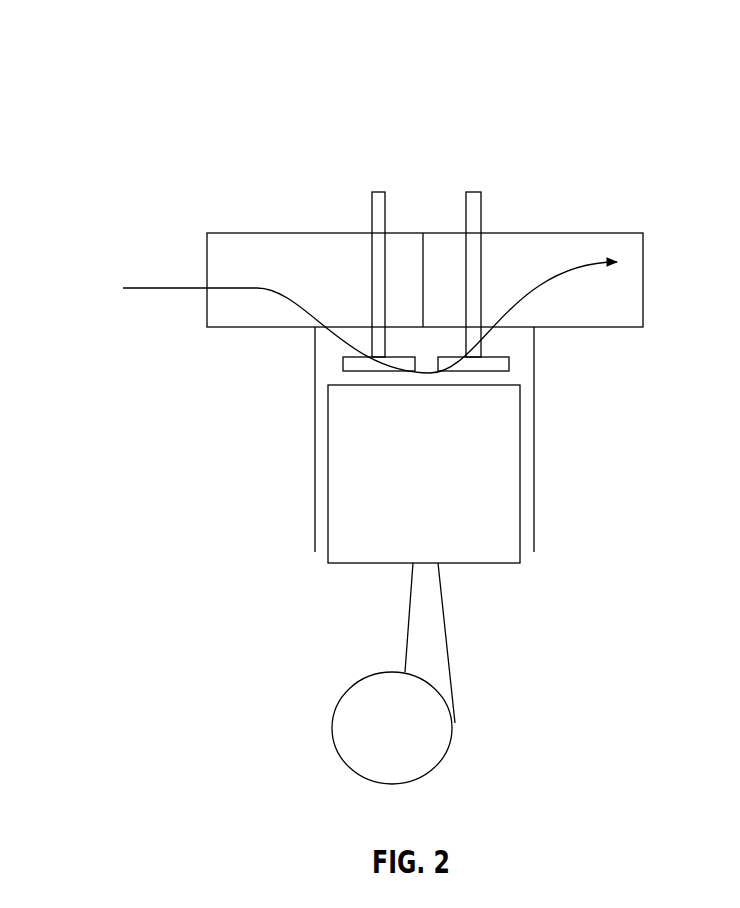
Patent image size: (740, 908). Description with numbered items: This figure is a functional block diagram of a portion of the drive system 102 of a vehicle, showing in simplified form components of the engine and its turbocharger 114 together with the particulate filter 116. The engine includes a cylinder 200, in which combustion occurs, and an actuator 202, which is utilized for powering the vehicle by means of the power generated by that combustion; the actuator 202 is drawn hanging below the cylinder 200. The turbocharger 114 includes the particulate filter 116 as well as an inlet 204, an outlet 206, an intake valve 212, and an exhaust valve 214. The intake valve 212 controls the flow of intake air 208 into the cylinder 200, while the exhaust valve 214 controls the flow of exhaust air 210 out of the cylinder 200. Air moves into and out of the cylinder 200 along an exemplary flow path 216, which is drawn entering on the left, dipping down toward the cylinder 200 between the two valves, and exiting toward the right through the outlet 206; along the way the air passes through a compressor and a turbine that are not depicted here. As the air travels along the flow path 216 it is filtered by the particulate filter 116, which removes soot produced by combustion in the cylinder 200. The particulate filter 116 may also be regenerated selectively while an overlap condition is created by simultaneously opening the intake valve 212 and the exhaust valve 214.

The drive system 102 is at (137, 55).
The turbocharger 114 is at (443, 128).
The particulate filter 116 is at (415, 380).
The cylinder 200 is at (503, 450).
The actuator 202 is at (433, 722).
The inlet 204 is at (333, 347).
The outlet 206 is at (516, 346).
The intake air 208 is at (264, 246).
The exhaust air 210 is at (560, 245).
The intake valve 212 is at (379, 192).
The exhaust valve 214 is at (477, 192).
The flow path 216 is at (155, 288).